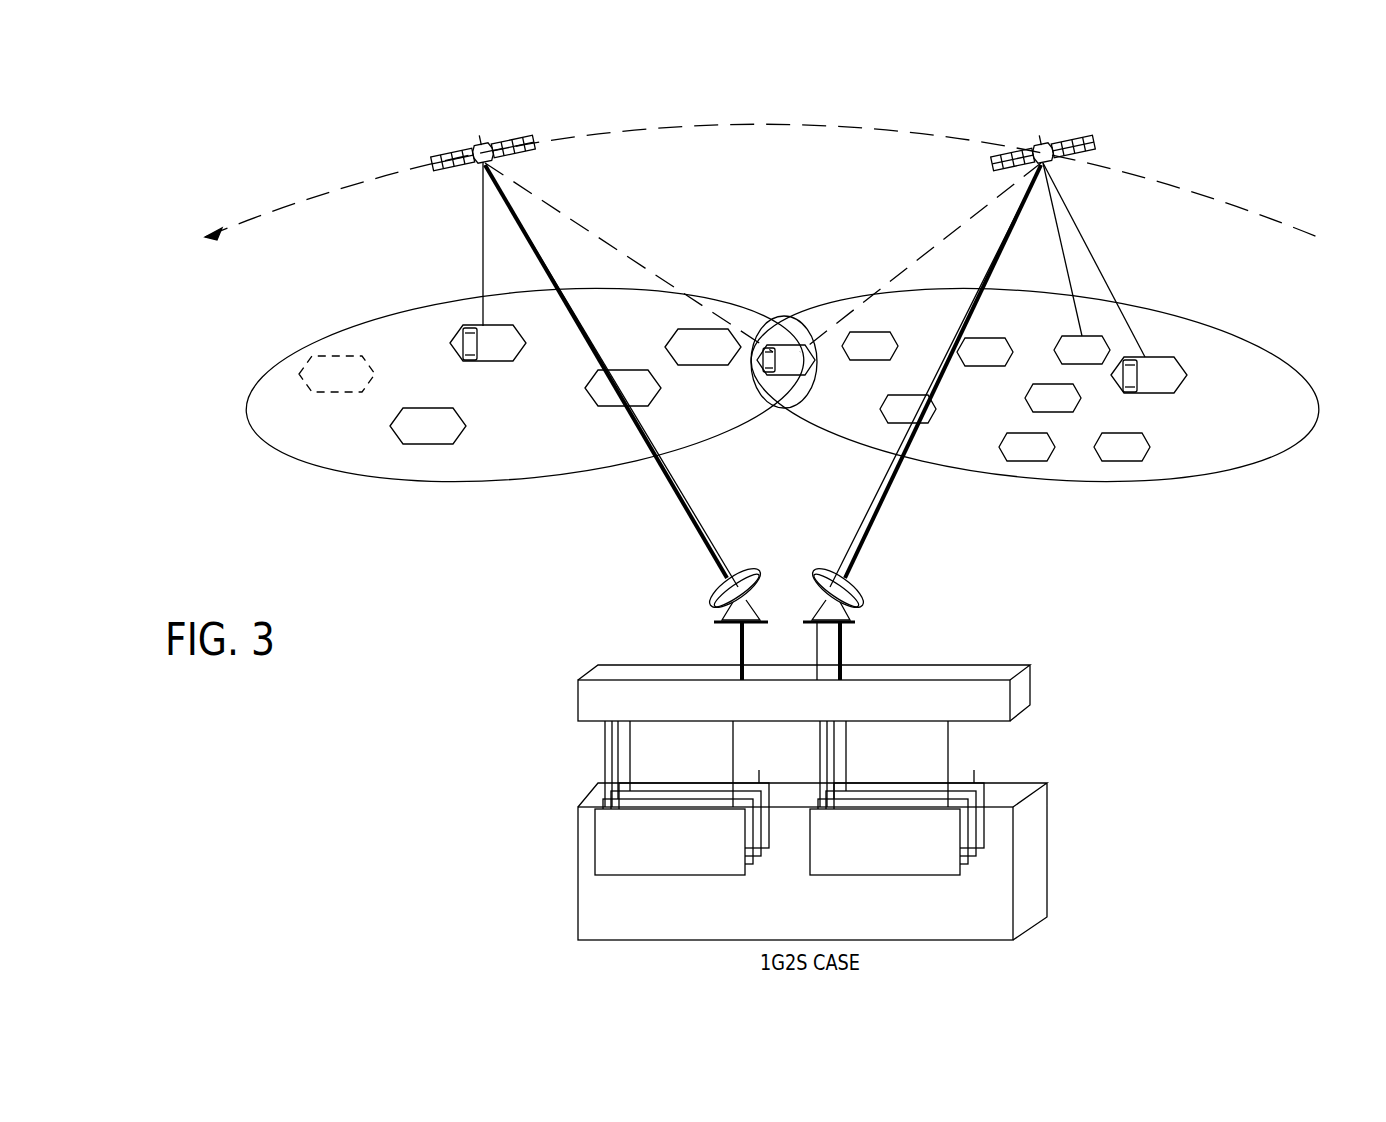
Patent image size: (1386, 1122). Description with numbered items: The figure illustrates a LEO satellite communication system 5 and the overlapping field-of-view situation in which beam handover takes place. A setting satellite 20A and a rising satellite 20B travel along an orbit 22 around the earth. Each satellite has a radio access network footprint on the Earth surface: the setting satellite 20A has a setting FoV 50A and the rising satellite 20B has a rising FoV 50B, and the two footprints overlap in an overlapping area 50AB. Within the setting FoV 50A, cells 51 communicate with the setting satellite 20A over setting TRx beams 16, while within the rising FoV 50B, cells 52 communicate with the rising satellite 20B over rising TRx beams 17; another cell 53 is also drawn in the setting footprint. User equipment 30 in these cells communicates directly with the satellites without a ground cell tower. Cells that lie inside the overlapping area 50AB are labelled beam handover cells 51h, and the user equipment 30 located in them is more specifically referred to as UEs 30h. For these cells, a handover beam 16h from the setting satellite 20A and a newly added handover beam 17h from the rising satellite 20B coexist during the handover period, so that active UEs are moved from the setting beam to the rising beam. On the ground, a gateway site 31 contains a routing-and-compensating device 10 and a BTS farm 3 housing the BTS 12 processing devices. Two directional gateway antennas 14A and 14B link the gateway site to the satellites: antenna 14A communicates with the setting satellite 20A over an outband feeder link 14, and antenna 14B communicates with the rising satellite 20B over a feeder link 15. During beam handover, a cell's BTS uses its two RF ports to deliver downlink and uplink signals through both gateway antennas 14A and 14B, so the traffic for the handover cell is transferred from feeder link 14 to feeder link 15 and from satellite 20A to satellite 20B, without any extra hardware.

The satellite communication system 5 is at (386, 118).
The orbit 22 is at (1165, 180).
The setting satellite 20A is at (495, 160).
The rising satellite 20B is at (1047, 145).
The setting TRx beam 16 is at (483, 240).
The setting satellite handover beam 16h is at (572, 222).
The rising TRx beam 17 is at (1088, 245).
The rising satellite handover beam 17h is at (958, 224).
The outband beam (feeder link) 14 is at (690, 518).
The outband beam (feeder link) 15 is at (866, 538).
The setting FoV 50A is at (283, 360).
The rising FoV 50B is at (1193, 326).
The overlapping area 50AB is at (790, 326).
The cell 51 is at (512, 362).
The cell 52 is at (1172, 390).
The cell 53 is at (301, 380).
The user equipment 30 is at (462, 352).
The handover user equipment 30h is at (760, 366).
The beam handover cell 51h is at (808, 385).
The first gateway antenna 14A is at (705, 592).
The second gateway antenna 14B is at (868, 582).
The BTS 12 is at (812, 653).
The routing-and-compensating device 10 is at (652, 668).
The gateway site 31 is at (1050, 858).
The BTS farm 3 is at (576, 940).